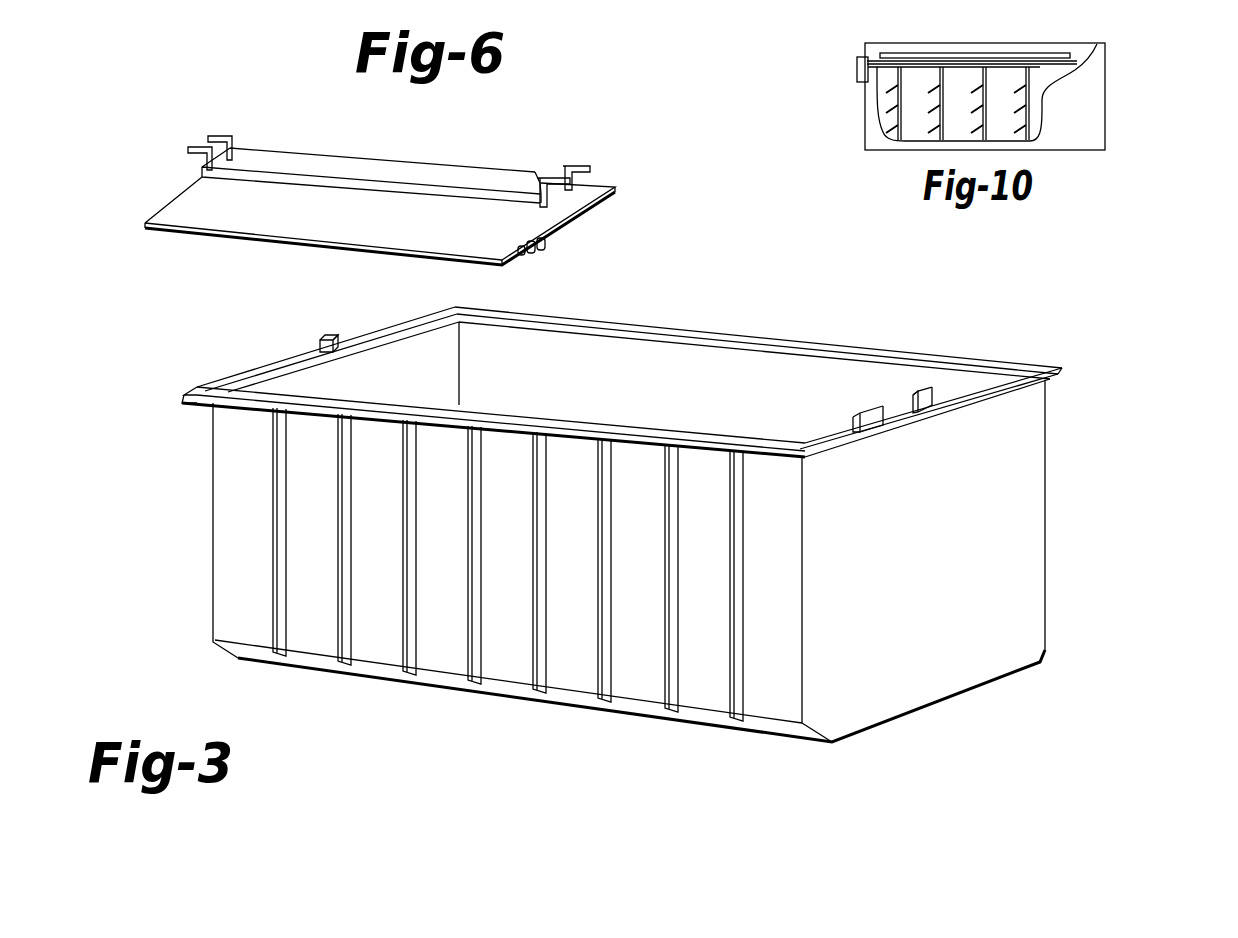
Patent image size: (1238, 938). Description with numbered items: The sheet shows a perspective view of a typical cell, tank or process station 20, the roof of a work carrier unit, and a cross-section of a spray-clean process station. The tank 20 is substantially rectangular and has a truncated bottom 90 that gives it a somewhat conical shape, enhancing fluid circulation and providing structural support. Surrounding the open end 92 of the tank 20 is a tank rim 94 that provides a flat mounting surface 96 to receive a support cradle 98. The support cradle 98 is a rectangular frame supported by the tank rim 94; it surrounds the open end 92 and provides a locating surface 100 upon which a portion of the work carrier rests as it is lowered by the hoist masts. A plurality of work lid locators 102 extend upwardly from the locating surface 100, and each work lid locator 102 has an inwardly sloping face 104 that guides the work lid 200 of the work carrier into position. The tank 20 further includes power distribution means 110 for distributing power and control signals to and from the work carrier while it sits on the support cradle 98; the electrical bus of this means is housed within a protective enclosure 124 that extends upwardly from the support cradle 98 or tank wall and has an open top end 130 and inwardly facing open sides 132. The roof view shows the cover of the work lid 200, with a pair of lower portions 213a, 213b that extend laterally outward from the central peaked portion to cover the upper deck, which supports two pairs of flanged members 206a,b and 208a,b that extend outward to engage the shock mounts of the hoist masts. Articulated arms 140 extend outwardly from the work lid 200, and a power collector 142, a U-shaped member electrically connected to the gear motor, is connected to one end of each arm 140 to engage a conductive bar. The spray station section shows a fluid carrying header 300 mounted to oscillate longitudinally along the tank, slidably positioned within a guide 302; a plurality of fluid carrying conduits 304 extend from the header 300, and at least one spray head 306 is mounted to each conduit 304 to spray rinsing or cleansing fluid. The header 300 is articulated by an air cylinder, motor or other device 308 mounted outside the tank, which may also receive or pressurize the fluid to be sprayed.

In FIG. 3, the tank 20 is at (203, 582).
In FIG. 3, the truncated bottom 90 is at (248, 642).
In FIG. 3, the open end 92 is at (657, 360).
In FIG. 3, the tank rim 94 is at (182, 403).
In FIG. 3, the flat mounting surface 96 is at (185, 396).
In FIG. 3, the support cradle 98 is at (903, 392).
In FIG. 3, the locating surface 100 is at (223, 387).
In FIG. 3, the work lid locator 102 is at (318, 340).
In FIG. 3, the inwardly sloping face 104 is at (333, 337).
In FIG. 3, the power distribution means 110 is at (872, 430).
In FIG. 3, the protective enclosure 124 is at (862, 433).
In FIG. 3, the open top end 130 is at (858, 413).
In FIG. 3, the inwardly facing open sides 132 is at (848, 422).
In FIG. 6, the work lid 200 is at (135, 148).
In FIG. 6, the flanged members 206a,b is at (190, 152).
In FIG. 6, the flanged members 208a,b is at (589, 168).
In FIG. 6, the lower portion 213a is at (183, 205).
In FIG. 6, the lower portion 213b is at (575, 188).
In FIG. 6, the articulated arm 140 is at (524, 250).
In FIG. 6, the power collector 142 is at (547, 243).
In FIG. 10, the fluid carrying header 300 is at (1058, 52).
In FIG. 10, the guide 302 is at (930, 52).
In FIG. 10, the fluid carrying conduit 304 is at (1030, 112).
In FIG. 10, the spray head 306 is at (890, 118).
In FIG. 10, the articulating means 308 is at (860, 65).